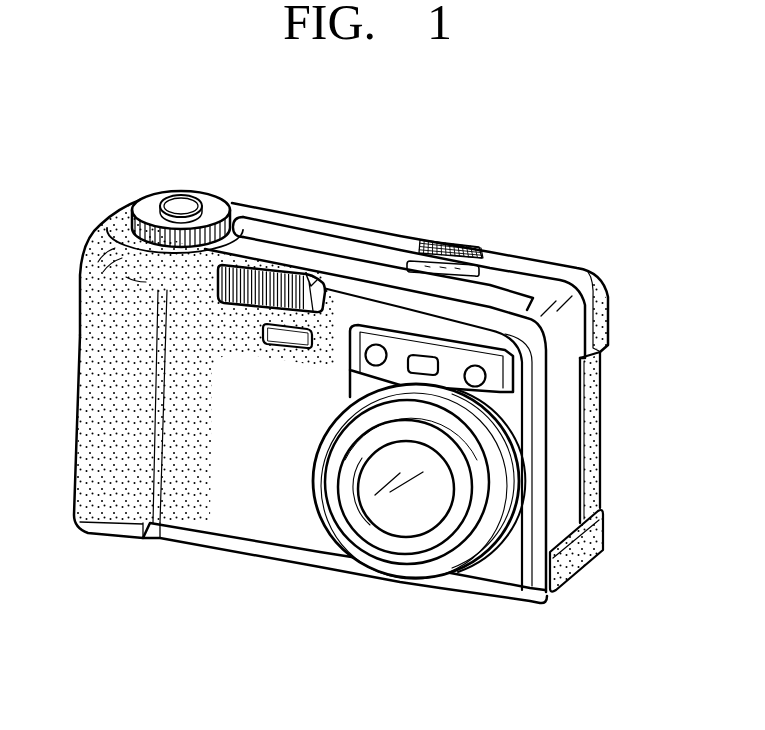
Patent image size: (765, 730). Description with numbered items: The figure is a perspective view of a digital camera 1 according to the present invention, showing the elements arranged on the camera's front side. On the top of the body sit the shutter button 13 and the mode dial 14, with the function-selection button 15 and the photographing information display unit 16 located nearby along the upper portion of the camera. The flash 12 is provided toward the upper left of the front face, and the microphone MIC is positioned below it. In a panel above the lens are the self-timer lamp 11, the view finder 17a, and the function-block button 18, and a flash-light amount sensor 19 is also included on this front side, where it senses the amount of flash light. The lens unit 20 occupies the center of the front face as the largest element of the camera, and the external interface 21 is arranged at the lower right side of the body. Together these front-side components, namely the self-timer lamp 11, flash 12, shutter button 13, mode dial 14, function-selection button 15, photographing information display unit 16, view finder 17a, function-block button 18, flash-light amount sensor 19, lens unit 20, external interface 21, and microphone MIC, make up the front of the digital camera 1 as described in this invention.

The digital camera 1 is at (263, 626).
The self-timer lamp 11 is at (377, 344).
The flash 12 is at (266, 283).
The shutter button 13 is at (180, 202).
The mode dial 14 is at (147, 208).
The function-selection button 15 is at (434, 240).
The photographing information display unit 16 is at (447, 268).
The view finder 17a is at (437, 355).
The function-block button 18 is at (470, 250).
The flash-light amount sensor 19 is at (486, 377).
The lens unit 20 is at (432, 490).
The external interface 21 is at (593, 537).
The microphone MIC is at (292, 337).